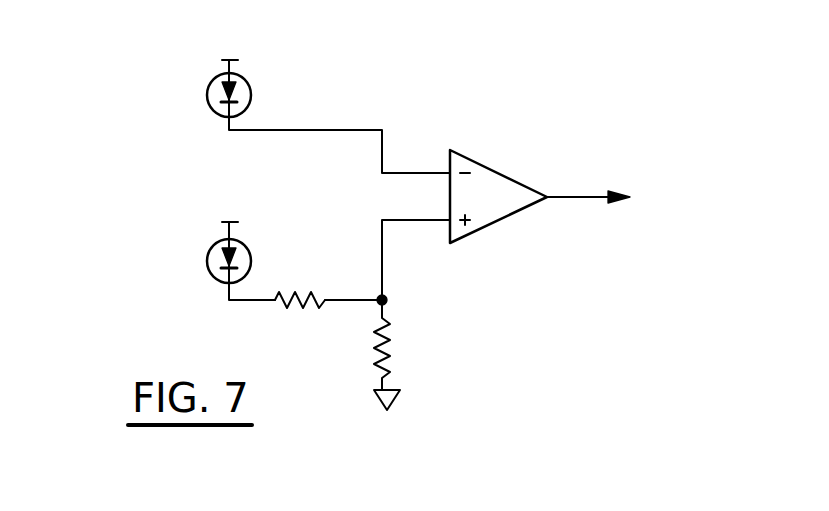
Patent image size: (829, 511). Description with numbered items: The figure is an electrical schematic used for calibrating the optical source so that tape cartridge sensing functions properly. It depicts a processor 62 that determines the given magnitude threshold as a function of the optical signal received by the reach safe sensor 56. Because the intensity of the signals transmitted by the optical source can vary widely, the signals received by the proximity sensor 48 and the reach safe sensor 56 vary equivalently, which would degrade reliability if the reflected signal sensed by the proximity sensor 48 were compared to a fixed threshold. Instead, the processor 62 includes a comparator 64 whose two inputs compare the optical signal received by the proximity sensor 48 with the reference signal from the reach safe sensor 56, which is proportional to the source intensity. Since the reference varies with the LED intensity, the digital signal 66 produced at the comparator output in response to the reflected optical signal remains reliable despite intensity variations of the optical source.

The proximity sensor 48 is at (207, 95).
The reach safe sensor 56 is at (207, 261).
The processor 62 is at (385, 52).
The comparator 64 is at (488, 167).
The digital signal 66 is at (560, 195).